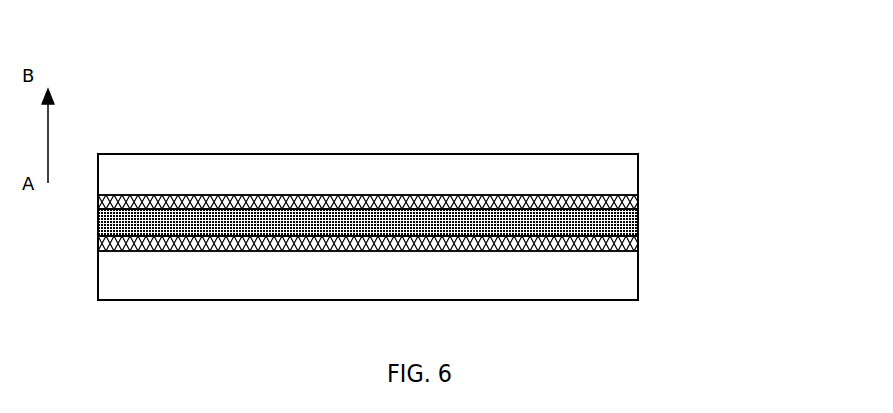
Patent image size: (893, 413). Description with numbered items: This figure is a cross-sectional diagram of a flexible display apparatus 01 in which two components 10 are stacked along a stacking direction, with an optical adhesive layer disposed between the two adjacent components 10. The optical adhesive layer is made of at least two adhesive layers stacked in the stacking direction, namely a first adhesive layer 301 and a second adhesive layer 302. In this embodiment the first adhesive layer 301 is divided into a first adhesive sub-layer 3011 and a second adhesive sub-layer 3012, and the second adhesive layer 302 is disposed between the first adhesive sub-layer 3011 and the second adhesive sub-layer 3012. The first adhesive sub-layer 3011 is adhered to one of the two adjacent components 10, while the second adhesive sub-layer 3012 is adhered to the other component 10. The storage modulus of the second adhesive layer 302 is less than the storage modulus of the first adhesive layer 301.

The flexible display apparatus 01 is at (153, 112).
The component 10 is at (622, 168).
The first adhesive layer 301 is at (758, 180).
The first adhesive sub-layer 3011 is at (622, 198).
The second adhesive sub-layer 3012 is at (622, 240).
The second adhesive layer 302 is at (100, 222).